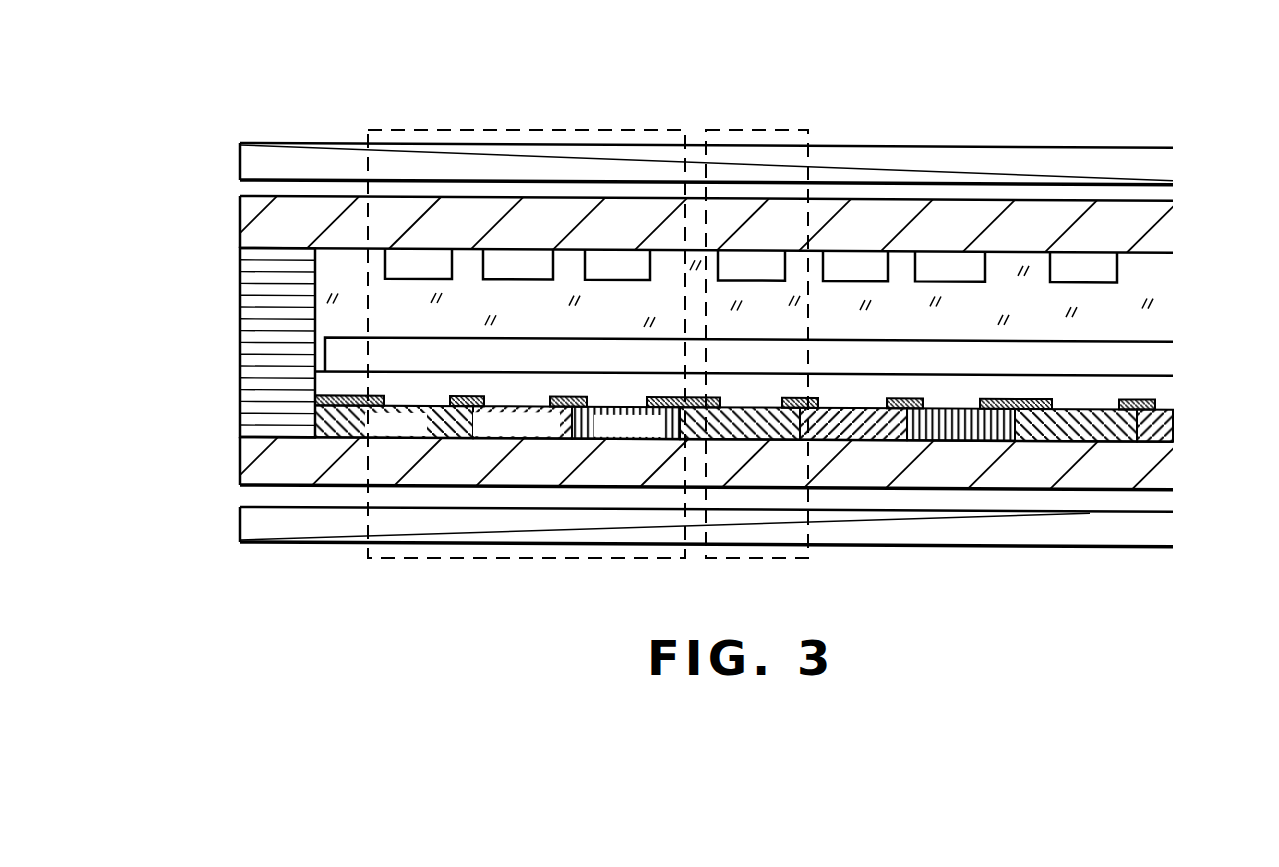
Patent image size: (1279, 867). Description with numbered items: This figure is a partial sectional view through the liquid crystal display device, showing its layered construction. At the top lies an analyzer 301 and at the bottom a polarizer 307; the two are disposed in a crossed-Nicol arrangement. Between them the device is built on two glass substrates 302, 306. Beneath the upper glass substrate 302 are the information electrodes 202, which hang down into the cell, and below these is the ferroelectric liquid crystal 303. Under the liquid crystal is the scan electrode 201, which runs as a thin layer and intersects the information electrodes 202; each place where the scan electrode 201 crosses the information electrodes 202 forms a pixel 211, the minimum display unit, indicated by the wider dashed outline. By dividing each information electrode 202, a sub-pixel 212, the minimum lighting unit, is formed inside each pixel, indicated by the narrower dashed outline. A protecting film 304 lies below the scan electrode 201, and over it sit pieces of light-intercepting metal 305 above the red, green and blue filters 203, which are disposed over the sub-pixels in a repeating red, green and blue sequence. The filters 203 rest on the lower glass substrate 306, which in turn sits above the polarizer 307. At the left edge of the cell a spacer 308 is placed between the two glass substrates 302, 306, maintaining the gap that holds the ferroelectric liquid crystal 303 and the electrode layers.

The analyzer 301 is at (1165, 167).
The glass substrate 302 is at (1165, 224).
The information electrodes 202 is at (1105, 261).
The ferroelectric liquid crystal 303 is at (1162, 318).
The scan electrode 201 is at (1165, 358).
The protecting film 304 is at (1160, 384).
The light-intercepting metal 305 is at (1157, 400).
The red, green and blue filters 203 is at (1170, 427).
The glass substrate 306 is at (1168, 465).
The polarizer 307 is at (1165, 526).
The spacer 308 is at (257, 348).
The pixel 211 is at (542, 130).
The sub-pixel 212 is at (760, 130).